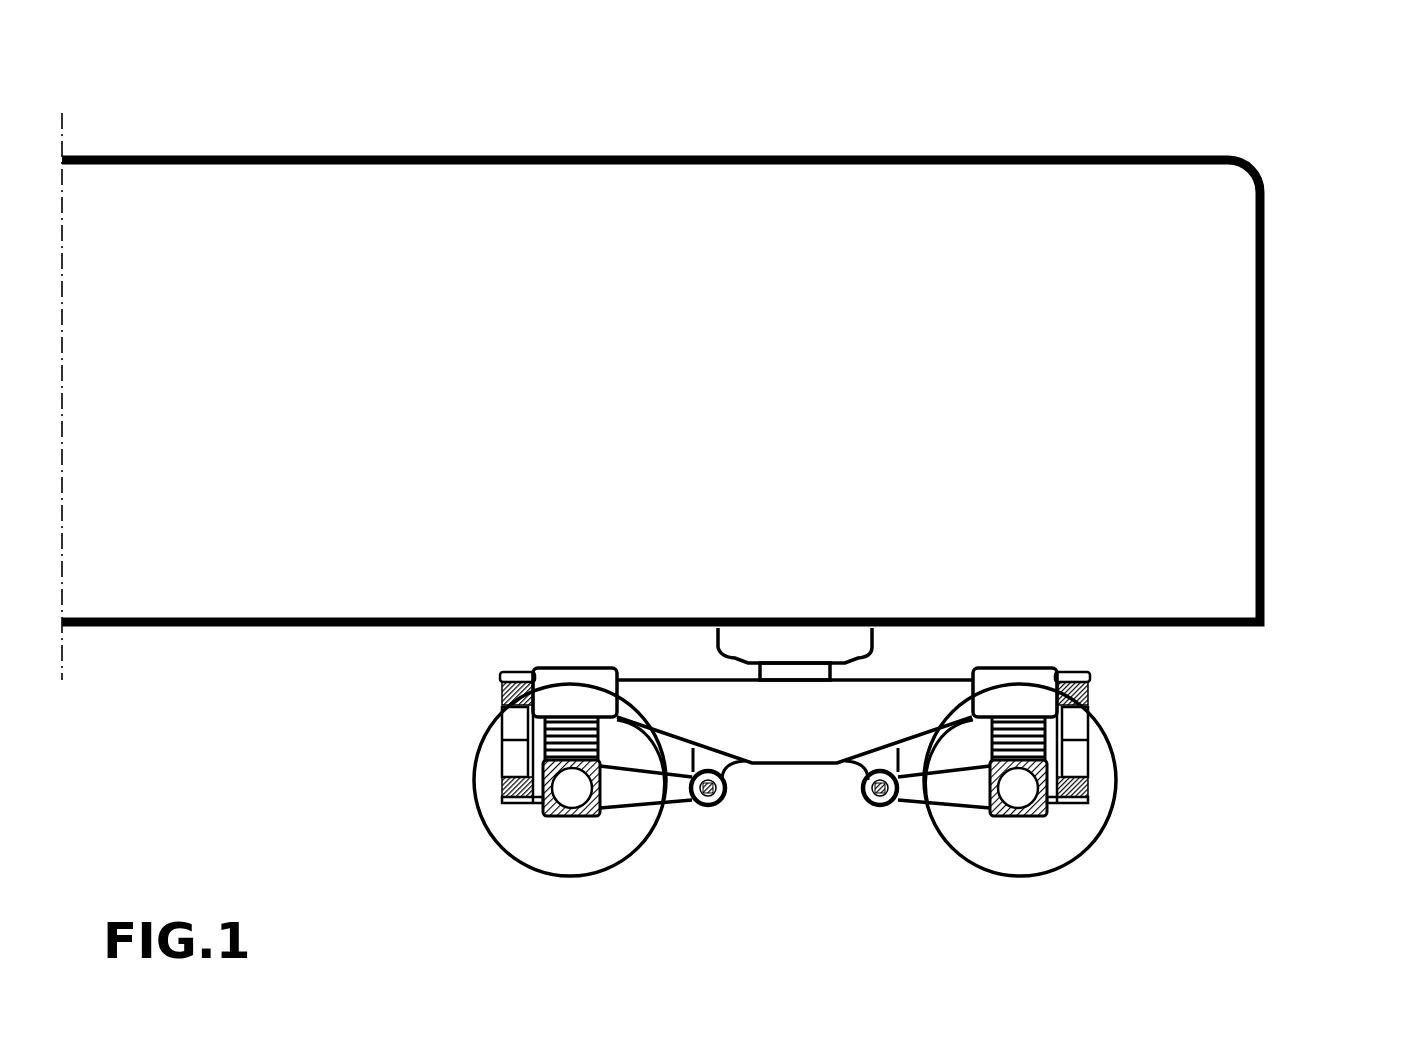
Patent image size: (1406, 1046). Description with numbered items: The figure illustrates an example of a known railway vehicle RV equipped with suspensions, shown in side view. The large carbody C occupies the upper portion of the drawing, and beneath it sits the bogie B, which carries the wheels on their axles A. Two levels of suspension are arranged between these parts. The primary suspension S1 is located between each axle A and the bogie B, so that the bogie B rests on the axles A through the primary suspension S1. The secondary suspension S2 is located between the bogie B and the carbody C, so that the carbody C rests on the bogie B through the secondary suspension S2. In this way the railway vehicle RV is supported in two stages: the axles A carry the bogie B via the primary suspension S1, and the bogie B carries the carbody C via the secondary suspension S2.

The railway vehicle RV is at (1233, 139).
The carbody C is at (1213, 202).
The bogie B is at (813, 732).
The primary suspension S1 is at (500, 715).
The secondary suspension S2 is at (813, 650).
The axle A is at (567, 795).